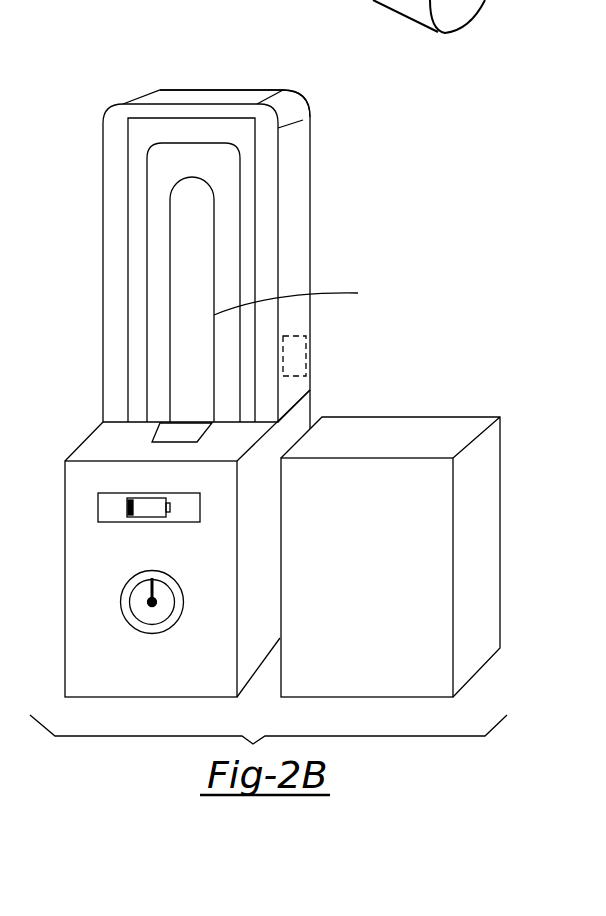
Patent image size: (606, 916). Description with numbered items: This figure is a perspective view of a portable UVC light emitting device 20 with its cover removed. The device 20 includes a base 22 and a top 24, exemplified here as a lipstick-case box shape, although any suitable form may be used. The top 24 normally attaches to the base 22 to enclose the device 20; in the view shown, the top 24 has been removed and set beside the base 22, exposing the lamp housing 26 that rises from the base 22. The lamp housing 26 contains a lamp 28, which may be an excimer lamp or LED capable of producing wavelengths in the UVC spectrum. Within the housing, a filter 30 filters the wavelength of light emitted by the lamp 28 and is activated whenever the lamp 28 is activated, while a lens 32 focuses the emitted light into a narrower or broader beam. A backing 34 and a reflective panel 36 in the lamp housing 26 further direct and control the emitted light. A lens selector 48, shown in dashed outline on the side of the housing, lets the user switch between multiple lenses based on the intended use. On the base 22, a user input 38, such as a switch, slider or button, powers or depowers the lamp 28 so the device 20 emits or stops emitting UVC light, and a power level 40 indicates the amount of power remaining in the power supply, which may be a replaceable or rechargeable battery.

The UVC light emitting device 20 is at (139, 40).
The base 22 is at (63, 533).
The top 24 is at (415, 417).
The lamp housing 26 is at (102, 419).
The lamp 28 is at (240, 351).
The filter 30 is at (242, 263).
The lens 32 is at (257, 212).
The backing 34 is at (267, 172).
The reflective panel 36 is at (280, 134).
The user input 38 is at (160, 430).
The power level 40 is at (183, 523).
The lens selector 48 is at (310, 347).